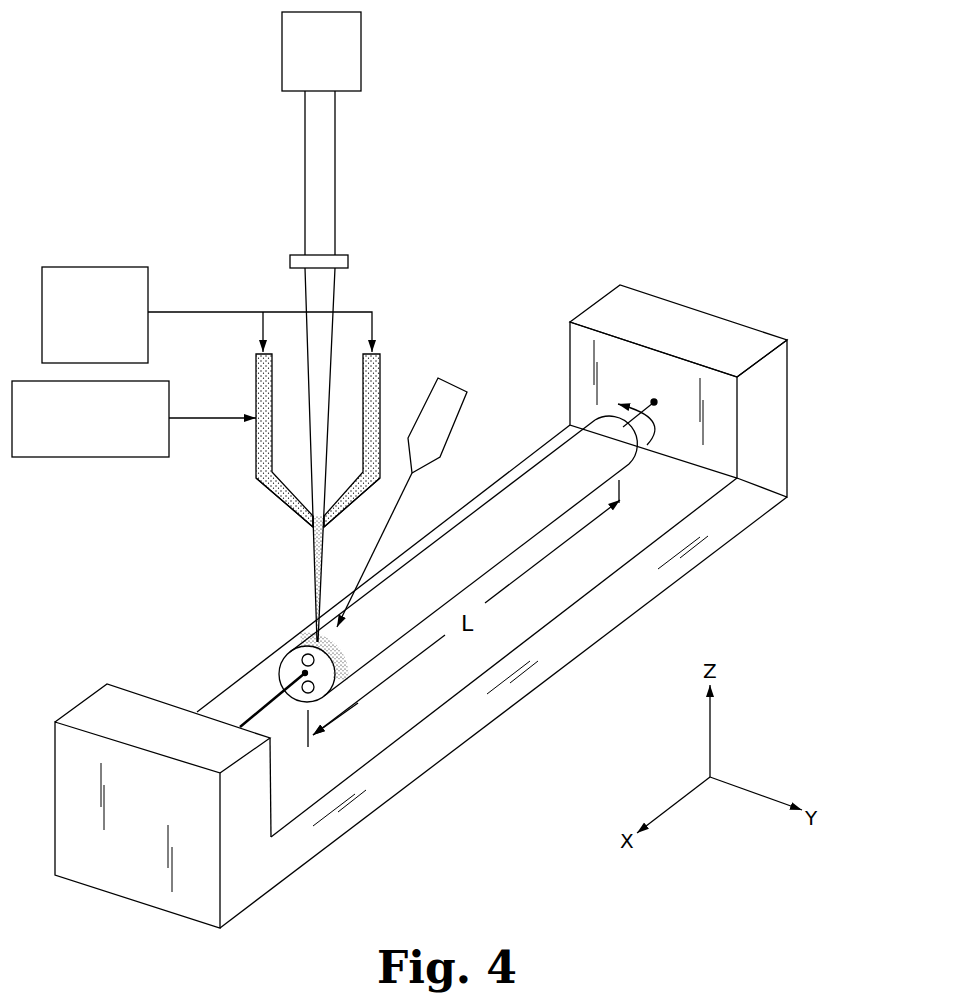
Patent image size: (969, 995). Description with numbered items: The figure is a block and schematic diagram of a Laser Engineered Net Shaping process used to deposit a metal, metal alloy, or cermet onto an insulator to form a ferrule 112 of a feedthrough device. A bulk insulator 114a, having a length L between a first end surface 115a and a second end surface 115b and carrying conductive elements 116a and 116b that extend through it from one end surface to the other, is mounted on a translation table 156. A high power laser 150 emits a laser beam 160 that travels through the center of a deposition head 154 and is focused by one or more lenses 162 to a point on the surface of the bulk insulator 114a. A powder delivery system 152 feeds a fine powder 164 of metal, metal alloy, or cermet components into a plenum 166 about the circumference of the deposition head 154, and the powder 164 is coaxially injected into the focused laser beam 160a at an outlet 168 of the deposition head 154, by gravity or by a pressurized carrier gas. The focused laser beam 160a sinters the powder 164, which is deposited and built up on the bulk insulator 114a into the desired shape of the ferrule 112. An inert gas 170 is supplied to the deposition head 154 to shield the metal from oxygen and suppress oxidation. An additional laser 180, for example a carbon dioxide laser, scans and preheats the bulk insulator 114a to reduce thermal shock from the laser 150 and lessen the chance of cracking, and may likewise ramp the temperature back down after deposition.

The laser 150 is at (361, 50).
The laser beam 160 is at (318, 135).
The lens 162 is at (348, 262).
The powder delivery system 152 is at (101, 243).
The inert gas 170 is at (80, 458).
The plenum 166 is at (256, 376).
The fine powder 164 is at (372, 352).
The deposition head 154 is at (256, 490).
The outlet 168 is at (310, 527).
The focused laser beam 160a is at (313, 570).
The translation table 156 is at (565, 638).
The ferrule 112 is at (345, 650).
The bulk insulator 114a is at (542, 480).
The conductive element 116a is at (305, 654).
The conductive element 116b is at (302, 702).
The first end surface 115a is at (290, 670).
The second end surface 115b is at (632, 445).
The additional laser 180 is at (440, 378).